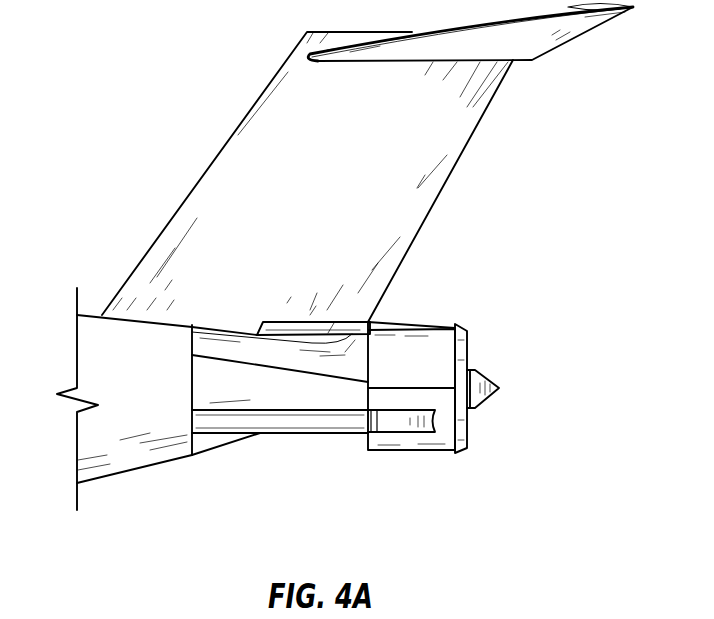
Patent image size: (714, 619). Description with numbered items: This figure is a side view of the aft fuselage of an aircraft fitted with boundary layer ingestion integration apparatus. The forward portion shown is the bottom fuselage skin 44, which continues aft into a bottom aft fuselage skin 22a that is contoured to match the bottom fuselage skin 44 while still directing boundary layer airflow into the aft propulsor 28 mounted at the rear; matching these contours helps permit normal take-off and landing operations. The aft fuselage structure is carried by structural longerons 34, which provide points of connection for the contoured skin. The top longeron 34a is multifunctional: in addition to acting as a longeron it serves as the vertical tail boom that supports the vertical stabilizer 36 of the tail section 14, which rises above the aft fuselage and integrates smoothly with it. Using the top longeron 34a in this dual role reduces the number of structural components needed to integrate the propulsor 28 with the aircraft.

The tail section 14 is at (117, 133).
The bottom aft fuselage skin 22a is at (220, 447).
The aft propulsor 28 is at (425, 458).
The structural longerons 34 is at (305, 423).
The top longeron 34a is at (272, 323).
The vertical stabilizer 36 is at (315, 227).
The bottom fuselage skin 44 is at (130, 473).